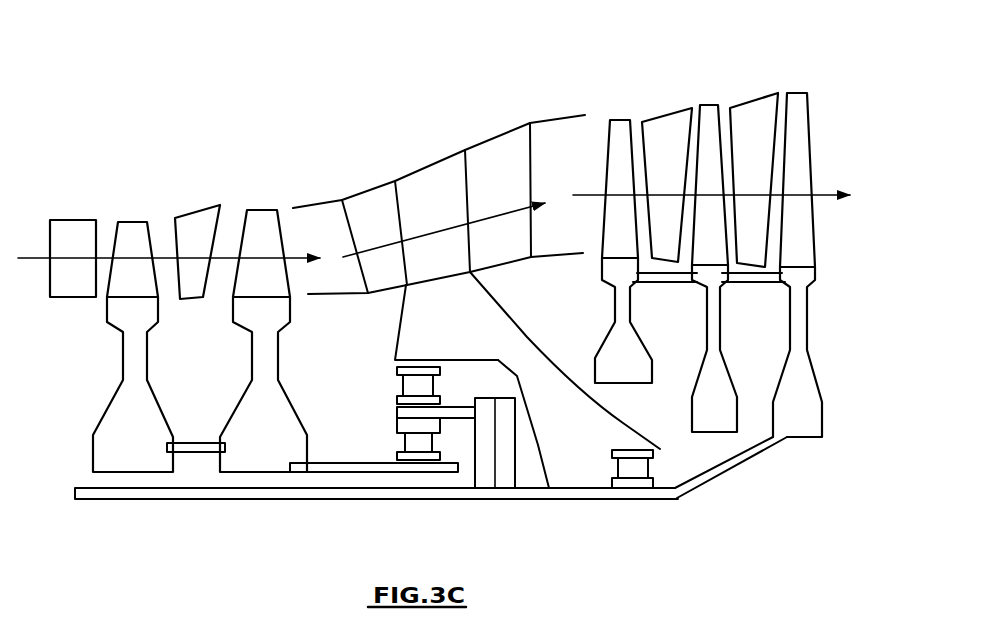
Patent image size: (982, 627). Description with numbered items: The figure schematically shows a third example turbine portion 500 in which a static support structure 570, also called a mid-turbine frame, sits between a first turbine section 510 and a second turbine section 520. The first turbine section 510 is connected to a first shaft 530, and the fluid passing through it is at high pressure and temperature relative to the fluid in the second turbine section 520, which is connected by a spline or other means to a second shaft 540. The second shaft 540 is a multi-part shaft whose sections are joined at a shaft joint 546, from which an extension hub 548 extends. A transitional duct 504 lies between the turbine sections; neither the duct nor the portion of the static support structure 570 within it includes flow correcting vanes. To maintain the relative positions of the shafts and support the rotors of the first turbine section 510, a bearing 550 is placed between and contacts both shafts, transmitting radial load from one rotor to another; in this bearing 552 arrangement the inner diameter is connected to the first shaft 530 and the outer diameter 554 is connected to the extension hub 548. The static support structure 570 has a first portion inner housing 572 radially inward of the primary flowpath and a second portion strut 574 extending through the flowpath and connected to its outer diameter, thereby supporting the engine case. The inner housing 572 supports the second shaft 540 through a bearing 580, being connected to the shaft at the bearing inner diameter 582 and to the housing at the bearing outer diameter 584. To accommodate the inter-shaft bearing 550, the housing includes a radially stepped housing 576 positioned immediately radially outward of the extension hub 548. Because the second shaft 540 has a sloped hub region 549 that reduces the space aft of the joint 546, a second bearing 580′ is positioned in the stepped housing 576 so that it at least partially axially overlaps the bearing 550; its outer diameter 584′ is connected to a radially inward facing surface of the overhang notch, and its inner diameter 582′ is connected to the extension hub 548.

The turbine portion 500 is at (355, 105).
The transitional duct 504 is at (373, 210).
The first turbine section 510 is at (183, 202).
The second turbine section 520 is at (708, 88).
The first shaft 530 is at (312, 467).
The second shaft 540 is at (572, 499).
The shaft joint 546 is at (497, 468).
The extension hub 548 is at (465, 412).
The sloped hub region 549 is at (737, 460).
The bearing 550 is at (421, 440).
The bearing 552 is at (410, 460).
The outer diameter of the bearing 554 is at (413, 408).
The static support structure 570 is at (495, 332).
The inner housing 572 is at (458, 302).
The strut 574 is at (456, 213).
The radially stepped housing 576 is at (477, 385).
The bearing 580 is at (642, 468).
The inner diameter of the bearing 582 is at (628, 490).
The outer diameter of the bearing 584 is at (630, 448).
The second bearing 580′ is at (412, 387).
The inner diameter of the second bearing 582′ is at (397, 422).
The outer diameter of the second bearing 584′ is at (427, 367).